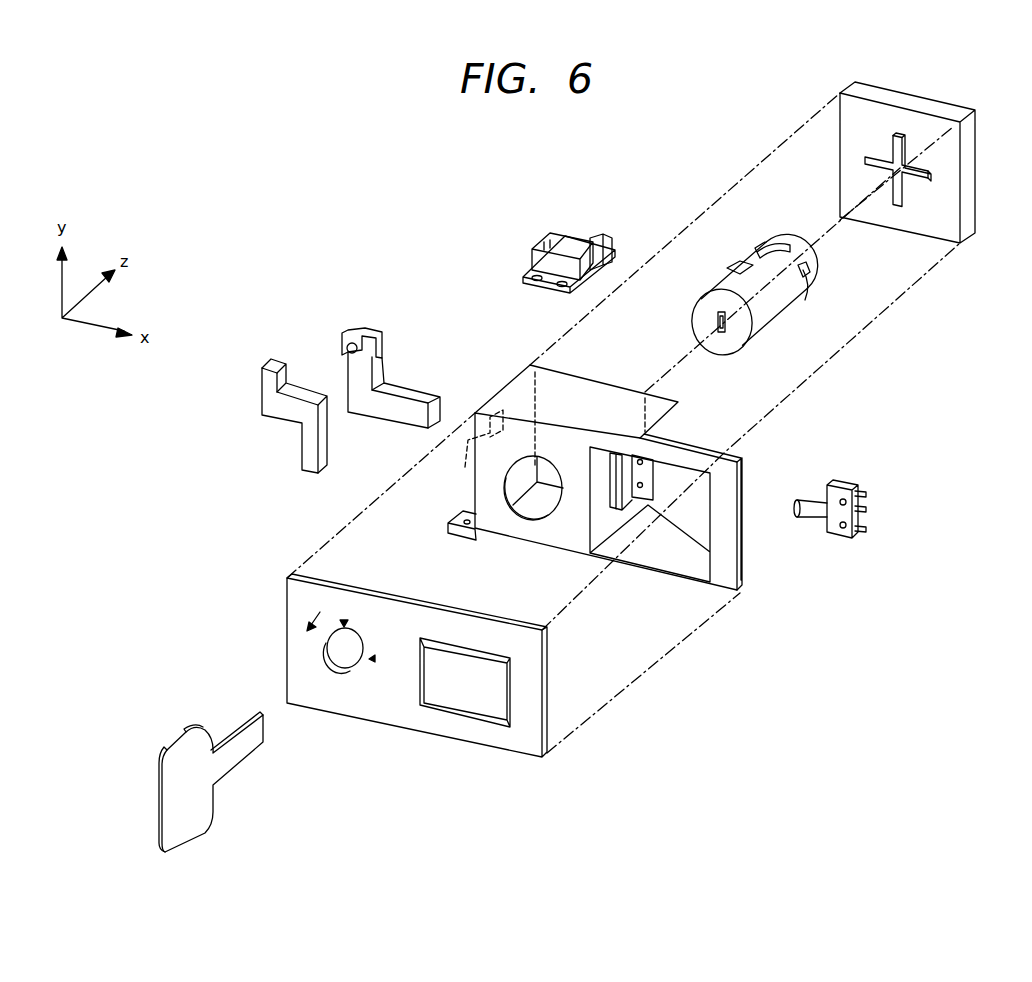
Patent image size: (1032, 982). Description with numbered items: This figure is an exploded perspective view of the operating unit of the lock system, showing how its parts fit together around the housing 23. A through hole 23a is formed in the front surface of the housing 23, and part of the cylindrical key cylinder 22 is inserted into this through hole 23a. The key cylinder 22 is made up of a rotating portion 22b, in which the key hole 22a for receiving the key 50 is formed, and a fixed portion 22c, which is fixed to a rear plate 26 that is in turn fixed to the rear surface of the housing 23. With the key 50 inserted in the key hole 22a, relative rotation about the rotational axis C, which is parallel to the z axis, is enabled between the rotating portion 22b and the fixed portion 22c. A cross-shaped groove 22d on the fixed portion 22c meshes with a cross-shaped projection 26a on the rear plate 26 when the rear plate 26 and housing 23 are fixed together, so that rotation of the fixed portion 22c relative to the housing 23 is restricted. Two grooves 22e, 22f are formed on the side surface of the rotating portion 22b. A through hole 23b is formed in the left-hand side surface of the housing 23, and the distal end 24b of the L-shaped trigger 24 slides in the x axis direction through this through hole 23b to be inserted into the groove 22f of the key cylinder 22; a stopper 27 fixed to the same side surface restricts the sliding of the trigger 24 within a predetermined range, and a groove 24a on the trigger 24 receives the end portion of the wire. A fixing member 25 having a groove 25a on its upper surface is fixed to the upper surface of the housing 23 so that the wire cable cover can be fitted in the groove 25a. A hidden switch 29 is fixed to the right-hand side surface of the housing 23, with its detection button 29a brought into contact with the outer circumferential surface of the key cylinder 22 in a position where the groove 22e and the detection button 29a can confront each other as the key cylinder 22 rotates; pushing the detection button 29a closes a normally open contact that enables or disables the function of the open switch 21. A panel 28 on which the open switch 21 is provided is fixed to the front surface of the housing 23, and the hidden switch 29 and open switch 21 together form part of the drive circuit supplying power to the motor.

The open switch 21 is at (425, 693).
The key cylinder 22 is at (771, 279).
The key hole 22a is at (723, 330).
The rotating portion 22b is at (773, 313).
The fixed portion 22c is at (805, 300).
The cross-shaped groove 22d is at (808, 280).
The groove 22e is at (755, 250).
The groove 22f is at (730, 237).
The housing 23 is at (520, 385).
The through hole 23a is at (521, 505).
The through hole 23b is at (487, 455).
The trigger 24 is at (381, 359).
The groove 24a is at (365, 330).
The distal end 24b is at (445, 402).
The fixing member 25 is at (578, 233).
The groove 25a is at (598, 242).
The rear plate 26 is at (986, 97).
The cross-shaped projection 26a is at (917, 177).
The stopper 27 is at (262, 387).
The panel 28 is at (513, 738).
The hidden switch 29 is at (845, 482).
The detection button 29a is at (805, 512).
The key 50 is at (190, 828).
The rotational axis C is at (688, 342).